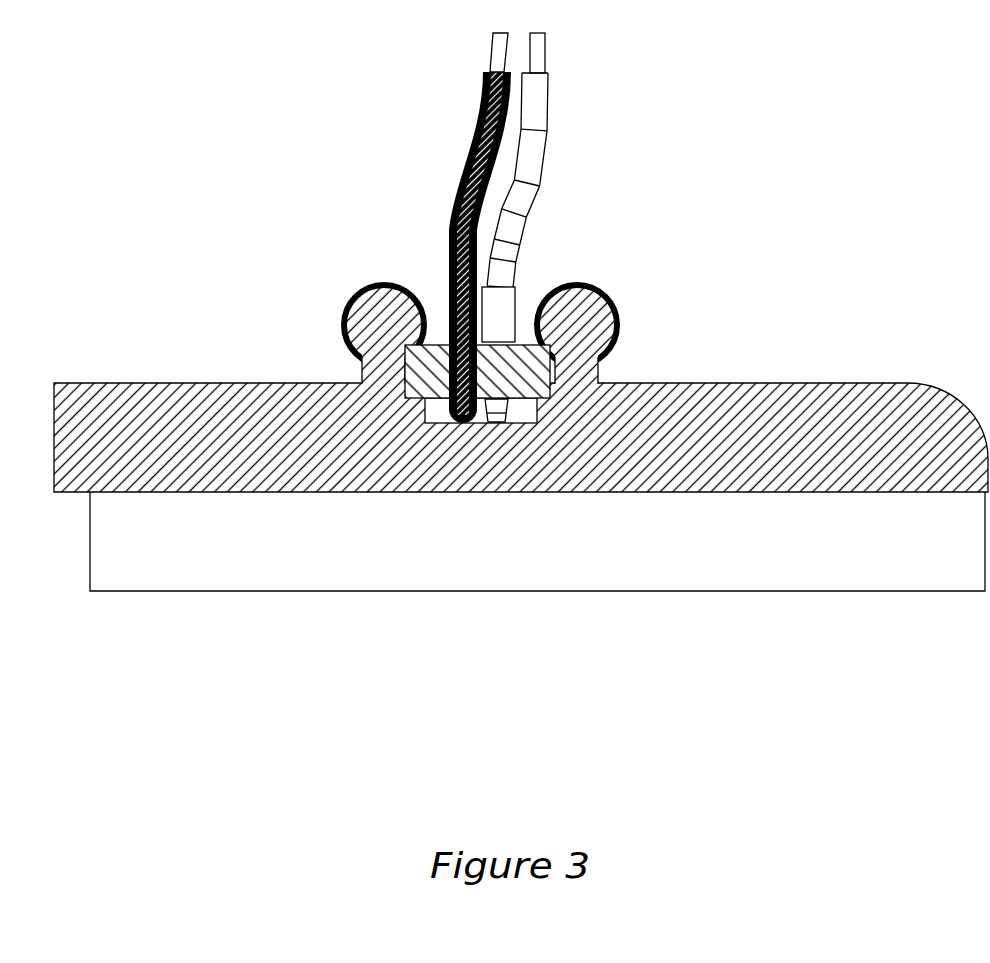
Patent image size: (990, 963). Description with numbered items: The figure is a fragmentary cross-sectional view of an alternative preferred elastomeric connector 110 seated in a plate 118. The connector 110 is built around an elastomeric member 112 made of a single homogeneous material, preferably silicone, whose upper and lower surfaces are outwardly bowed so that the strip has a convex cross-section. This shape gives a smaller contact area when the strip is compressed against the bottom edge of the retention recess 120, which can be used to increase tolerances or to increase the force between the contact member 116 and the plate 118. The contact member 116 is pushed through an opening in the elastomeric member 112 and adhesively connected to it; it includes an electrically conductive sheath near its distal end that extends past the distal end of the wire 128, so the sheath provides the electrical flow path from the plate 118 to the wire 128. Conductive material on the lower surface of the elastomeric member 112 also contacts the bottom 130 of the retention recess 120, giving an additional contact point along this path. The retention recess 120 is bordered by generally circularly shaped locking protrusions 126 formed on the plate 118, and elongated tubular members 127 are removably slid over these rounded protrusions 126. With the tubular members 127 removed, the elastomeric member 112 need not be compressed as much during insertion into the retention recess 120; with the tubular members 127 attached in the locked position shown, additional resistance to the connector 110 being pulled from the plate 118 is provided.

The elastomeric connector 110 is at (715, 93).
The elastomeric member 112 is at (407, 368).
The contact member 116 is at (448, 345).
The plate 118 is at (653, 393).
The retention recess 120 is at (440, 413).
The locking protrusions 126 is at (355, 312).
The tubular members 127 is at (605, 295).
The wire 128 is at (412, 228).
The bottom of the retention recess 130 is at (543, 397).